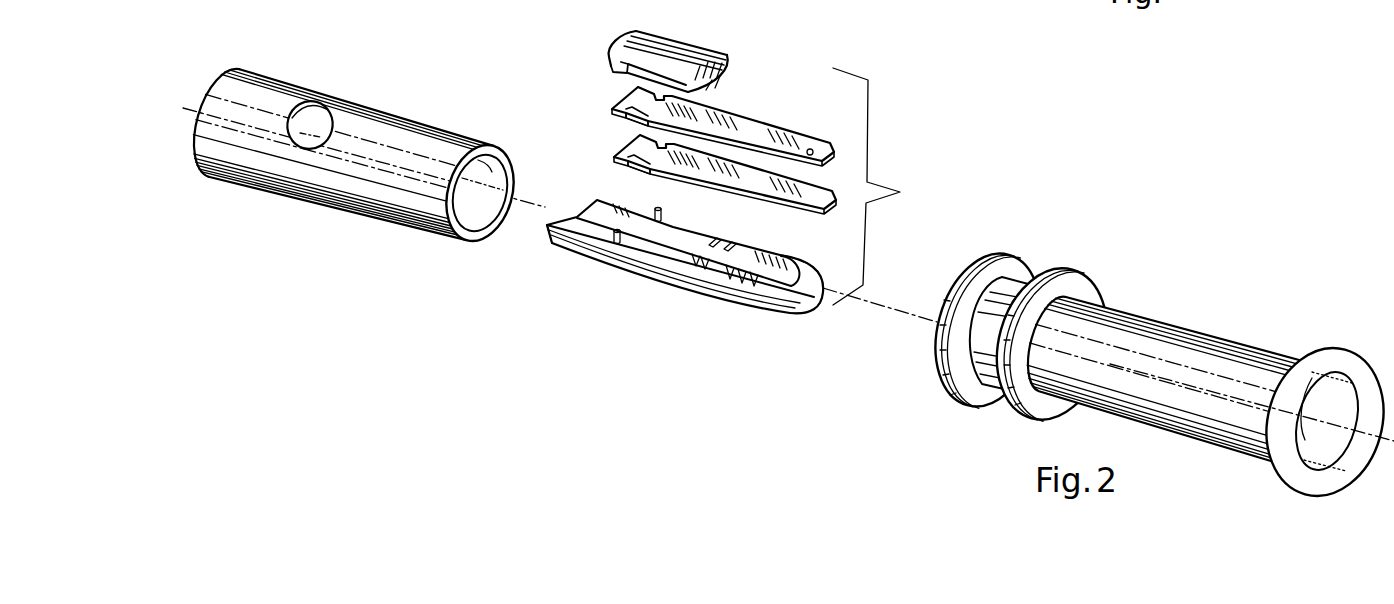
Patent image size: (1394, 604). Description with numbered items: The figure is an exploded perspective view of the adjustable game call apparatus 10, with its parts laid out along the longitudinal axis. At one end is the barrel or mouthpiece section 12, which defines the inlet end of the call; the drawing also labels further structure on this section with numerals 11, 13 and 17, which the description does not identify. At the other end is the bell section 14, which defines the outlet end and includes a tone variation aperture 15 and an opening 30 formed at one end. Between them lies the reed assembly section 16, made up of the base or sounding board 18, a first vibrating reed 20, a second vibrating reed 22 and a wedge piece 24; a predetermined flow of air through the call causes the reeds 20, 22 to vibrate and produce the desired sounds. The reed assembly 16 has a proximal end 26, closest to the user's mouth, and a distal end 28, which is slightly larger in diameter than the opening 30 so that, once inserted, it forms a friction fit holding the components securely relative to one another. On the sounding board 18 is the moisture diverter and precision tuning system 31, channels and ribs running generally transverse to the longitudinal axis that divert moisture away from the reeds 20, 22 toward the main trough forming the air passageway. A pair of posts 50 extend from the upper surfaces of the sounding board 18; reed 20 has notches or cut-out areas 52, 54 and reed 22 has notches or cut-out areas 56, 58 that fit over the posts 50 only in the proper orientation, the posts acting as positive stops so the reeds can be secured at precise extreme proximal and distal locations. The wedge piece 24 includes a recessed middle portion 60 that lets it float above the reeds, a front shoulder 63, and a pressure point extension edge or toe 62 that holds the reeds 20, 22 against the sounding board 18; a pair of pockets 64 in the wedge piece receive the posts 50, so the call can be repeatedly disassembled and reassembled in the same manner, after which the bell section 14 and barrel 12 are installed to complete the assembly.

The adjustable game call apparatus 10 is at (1156, 313).
The end collar 11 is at (1322, 362).
The barrel or mouthpiece section 12 is at (1150, 304).
The flanges 13 is at (1021, 332).
The bell section 14 is at (376, 102).
The tone variation aperture 15 is at (306, 100).
The reed assembly section 16 is at (709, 188).
The hub 17 is at (980, 363).
The base or sounding board 18 is at (668, 286).
The first vibrating reed 20 is at (699, 174).
The second vibrating reed 22 is at (684, 123).
The wedge piece 24 is at (662, 47).
The proximal end 26 is at (798, 328).
The distal end 28 is at (536, 253).
The opening 30 is at (493, 148).
The moisture diverter and precision tuning system 31 is at (786, 242).
The posts 50 is at (656, 222).
The notch or cut-out area 52 is at (636, 163).
The notch or cut-out area 54 is at (652, 144).
The notch or cut-out area 56 is at (634, 116).
The notch or cut-out area 58 is at (676, 98).
The recessed middle portion 60 is at (630, 72).
The pressure point extension edge or toe 62 is at (690, 91).
The front shoulder 63 is at (638, 86).
The pockets 64 is at (612, 62).